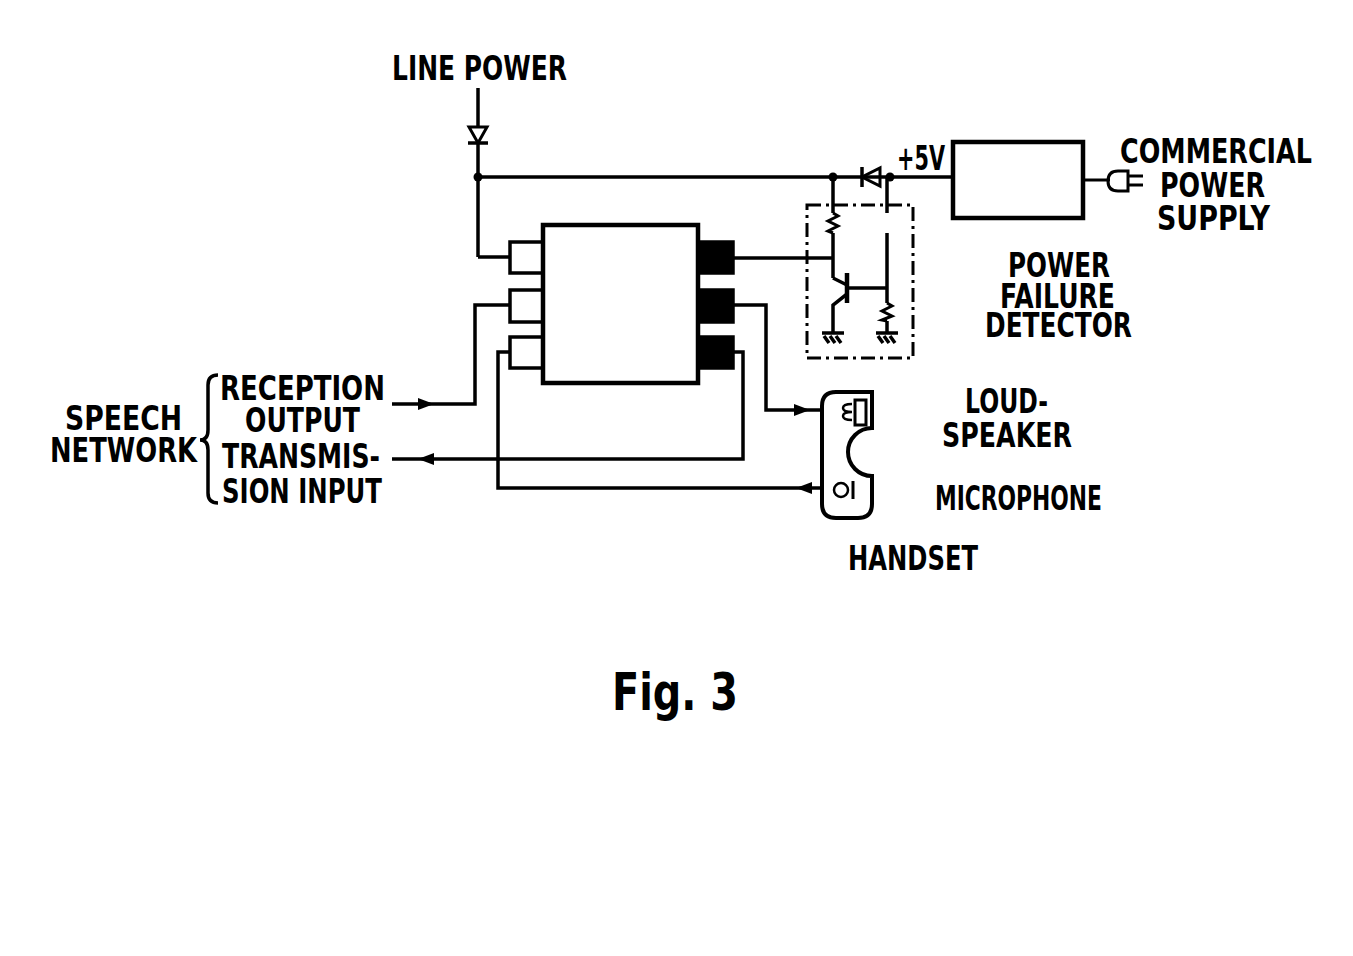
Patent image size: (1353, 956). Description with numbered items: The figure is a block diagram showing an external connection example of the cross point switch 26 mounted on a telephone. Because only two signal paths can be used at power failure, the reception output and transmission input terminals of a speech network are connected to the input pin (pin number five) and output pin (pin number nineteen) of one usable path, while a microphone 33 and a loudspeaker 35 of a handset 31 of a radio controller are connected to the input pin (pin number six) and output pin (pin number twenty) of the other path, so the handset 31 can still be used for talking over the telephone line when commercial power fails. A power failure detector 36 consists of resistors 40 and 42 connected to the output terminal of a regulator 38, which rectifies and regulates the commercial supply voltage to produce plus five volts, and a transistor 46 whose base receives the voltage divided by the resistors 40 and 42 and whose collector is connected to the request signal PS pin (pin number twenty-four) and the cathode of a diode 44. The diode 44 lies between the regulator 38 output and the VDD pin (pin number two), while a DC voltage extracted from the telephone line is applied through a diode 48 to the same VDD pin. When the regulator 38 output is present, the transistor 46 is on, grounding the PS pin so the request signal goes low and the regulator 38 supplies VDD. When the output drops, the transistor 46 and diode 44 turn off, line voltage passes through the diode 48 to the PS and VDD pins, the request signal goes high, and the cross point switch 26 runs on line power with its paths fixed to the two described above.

The cross point switch 26 is at (628, 225).
The handset 31 is at (869, 485).
The microphone 33 is at (872, 492).
The loudspeaker 35 is at (872, 412).
The power failure detector 36 is at (898, 275).
The regulator 38 is at (1029, 142).
The resistor 40 is at (896, 228).
The resistor 42 is at (896, 318).
The diode 44 is at (870, 170).
The transistor 46 is at (848, 272).
The diode 48 is at (496, 143).